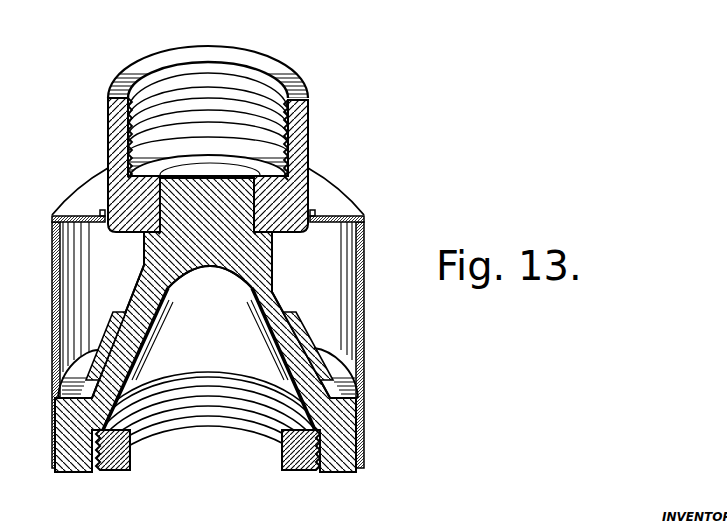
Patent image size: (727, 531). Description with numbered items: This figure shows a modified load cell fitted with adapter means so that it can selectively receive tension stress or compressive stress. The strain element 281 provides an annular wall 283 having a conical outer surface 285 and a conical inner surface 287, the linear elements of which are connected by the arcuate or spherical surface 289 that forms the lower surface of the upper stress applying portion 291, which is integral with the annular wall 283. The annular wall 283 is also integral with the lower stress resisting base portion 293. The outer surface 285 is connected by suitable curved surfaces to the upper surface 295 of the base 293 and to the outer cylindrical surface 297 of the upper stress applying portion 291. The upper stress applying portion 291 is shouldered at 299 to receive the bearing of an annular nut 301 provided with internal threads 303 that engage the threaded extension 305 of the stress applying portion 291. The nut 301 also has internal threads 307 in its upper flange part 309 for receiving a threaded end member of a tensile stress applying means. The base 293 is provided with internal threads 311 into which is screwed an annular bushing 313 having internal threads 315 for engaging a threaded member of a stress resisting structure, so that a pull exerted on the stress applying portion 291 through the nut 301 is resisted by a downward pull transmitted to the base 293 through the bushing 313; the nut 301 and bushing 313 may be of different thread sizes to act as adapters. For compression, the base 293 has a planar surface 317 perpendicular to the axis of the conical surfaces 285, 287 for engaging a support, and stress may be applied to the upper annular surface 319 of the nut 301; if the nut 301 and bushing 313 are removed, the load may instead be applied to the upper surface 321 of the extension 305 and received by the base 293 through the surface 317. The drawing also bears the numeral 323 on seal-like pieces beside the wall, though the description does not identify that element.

The strain element 281 is at (287, 308).
The annular wall 283 is at (292, 330).
The conical outer surface 285 is at (272, 290).
The conical inner surface 287 is at (265, 322).
The arcuate or spherical surface 289 is at (205, 268).
The upper stress applying portion 291 is at (153, 247).
The lower stress resisting base portion 293 is at (340, 422).
The upper surface of the base 295 is at (332, 385).
The outer cylindrical surface 297 is at (272, 247).
The shoulder 299 is at (262, 212).
The annular nut 301 is at (310, 154).
The internal threads 303 is at (275, 190).
The threaded extension 305 is at (128, 167).
The internal threads 307 is at (272, 84).
The upper flange part 309 is at (310, 110).
The internal threads 311 is at (303, 476).
The annular bushing 313 is at (293, 476).
The internal threads 315 is at (132, 455).
The planar surface 317 is at (72, 475).
The upper annular surface 319 is at (137, 62).
The upper surface of the extension 321 is at (208, 167).
The seal ring 323 is at (110, 323).